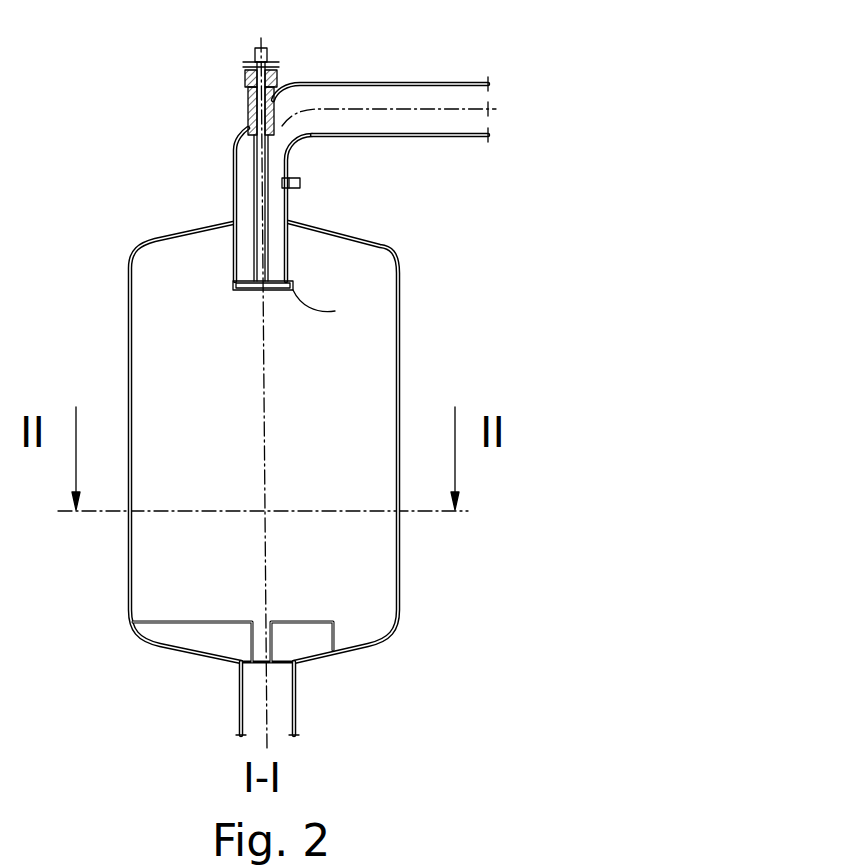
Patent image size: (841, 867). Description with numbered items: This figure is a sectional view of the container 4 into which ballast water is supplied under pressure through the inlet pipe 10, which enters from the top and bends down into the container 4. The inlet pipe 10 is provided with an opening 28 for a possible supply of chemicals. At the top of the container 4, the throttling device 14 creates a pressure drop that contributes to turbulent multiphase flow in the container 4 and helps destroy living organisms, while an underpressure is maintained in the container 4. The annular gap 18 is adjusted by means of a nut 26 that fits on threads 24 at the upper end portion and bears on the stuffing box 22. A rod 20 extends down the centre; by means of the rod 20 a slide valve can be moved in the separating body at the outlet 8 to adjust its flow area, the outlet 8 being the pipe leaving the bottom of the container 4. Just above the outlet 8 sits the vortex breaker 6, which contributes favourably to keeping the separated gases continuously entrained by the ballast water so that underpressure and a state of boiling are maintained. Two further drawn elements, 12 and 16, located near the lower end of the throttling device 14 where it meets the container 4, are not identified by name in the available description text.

The container 4 is at (400, 337).
The vortex breaker 6 is at (317, 630).
The outlet 8 is at (297, 695).
The inlet pipe 10 is at (388, 82).
The inner liner 12 is at (335, 311).
The throttling device 14 is at (247, 276).
The flange 16 is at (243, 286).
The annular gap 18 is at (233, 283).
The rod 20 is at (256, 153).
The stuffing box 22 is at (249, 108).
The threads 24 is at (255, 53).
The nut 26 is at (245, 74).
The opening 28 is at (300, 184).